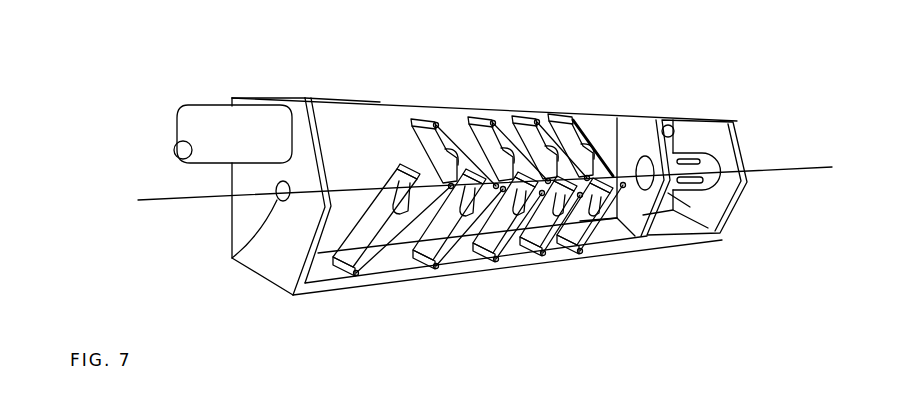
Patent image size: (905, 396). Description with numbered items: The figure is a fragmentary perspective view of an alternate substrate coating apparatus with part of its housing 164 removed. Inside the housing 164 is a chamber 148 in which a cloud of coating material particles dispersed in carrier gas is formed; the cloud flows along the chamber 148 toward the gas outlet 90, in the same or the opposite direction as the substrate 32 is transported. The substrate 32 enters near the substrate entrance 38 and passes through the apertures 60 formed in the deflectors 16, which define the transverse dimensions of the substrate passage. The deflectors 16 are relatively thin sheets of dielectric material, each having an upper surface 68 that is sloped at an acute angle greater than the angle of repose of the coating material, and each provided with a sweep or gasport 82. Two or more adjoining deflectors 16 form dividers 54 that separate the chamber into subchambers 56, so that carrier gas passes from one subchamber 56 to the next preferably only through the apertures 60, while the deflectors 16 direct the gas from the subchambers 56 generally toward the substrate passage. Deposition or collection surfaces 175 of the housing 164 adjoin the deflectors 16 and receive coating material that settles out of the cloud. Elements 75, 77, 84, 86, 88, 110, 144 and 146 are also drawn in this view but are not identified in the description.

The deflector 16 is at (553, 118).
The substrate 32 is at (160, 197).
The substrate entrance 38 is at (232, 258).
The divider 54 is at (424, 116).
The subchamber 56 is at (343, 140).
The aperture 60 is at (455, 156).
The upper surface 68 is at (432, 264).
The hole 75 is at (183, 200).
The side wall 77 is at (390, 137).
The sweep or gasport 82 is at (448, 128).
The bracket 84 is at (698, 200).
The mounting tab 86 is at (728, 190).
The slot 88 is at (690, 157).
The gas outlet 90 is at (666, 124).
The tube 110 is at (200, 107).
The bottom rail 144 is at (280, 267).
The end portion 146 is at (628, 125).
The chamber 148 is at (360, 128).
The housing 164 is at (737, 122).
The deposition or collection surface 175 is at (317, 273).